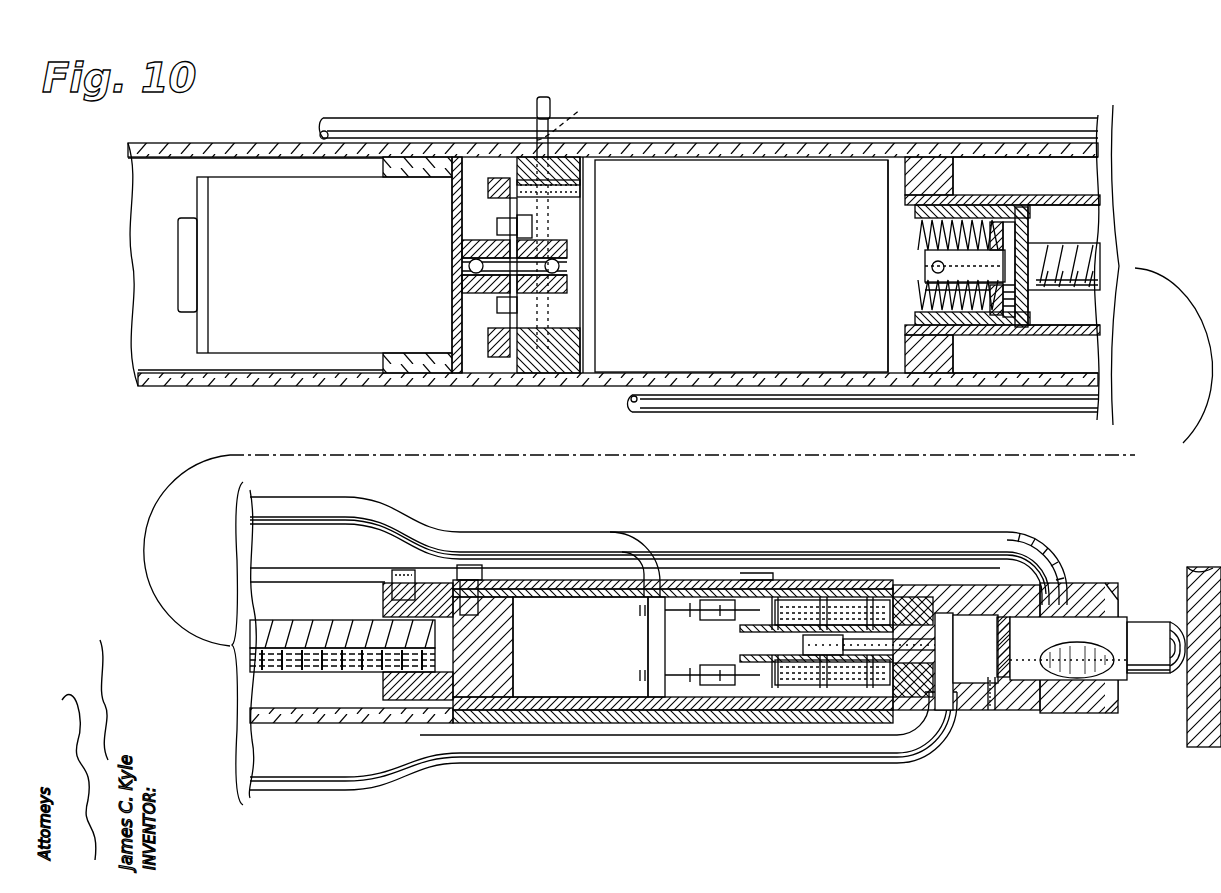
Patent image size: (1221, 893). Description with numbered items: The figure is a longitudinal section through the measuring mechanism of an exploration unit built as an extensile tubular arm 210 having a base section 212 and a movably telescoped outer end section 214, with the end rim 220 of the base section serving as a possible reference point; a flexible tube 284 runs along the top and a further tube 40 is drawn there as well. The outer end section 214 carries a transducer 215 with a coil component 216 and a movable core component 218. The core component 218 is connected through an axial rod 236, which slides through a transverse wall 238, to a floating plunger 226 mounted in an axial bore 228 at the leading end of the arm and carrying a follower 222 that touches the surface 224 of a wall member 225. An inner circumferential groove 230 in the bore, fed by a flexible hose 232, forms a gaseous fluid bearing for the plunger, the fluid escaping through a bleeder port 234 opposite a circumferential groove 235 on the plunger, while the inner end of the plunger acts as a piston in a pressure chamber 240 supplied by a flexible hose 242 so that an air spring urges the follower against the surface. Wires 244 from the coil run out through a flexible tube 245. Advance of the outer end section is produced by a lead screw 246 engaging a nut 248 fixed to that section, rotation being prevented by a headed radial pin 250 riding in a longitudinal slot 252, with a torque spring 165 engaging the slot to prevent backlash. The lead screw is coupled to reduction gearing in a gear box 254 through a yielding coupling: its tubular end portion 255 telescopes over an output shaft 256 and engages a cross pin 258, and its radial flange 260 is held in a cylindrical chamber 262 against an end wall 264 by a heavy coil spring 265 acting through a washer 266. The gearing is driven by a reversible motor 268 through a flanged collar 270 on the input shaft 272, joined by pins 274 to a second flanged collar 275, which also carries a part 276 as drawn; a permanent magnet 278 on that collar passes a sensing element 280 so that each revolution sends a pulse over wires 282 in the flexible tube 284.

The rail rod 40 is at (549, 98).
The torque spring 165 is at (395, 572).
The tubular arm 210 is at (290, 388).
The base section 212 is at (725, 395).
The outer end section 214 is at (958, 582).
The transducer 215 is at (818, 713).
The coil component 216 is at (808, 605).
The core component 218 is at (828, 640).
The end rim 220 is at (775, 580).
The follower 222 is at (1180, 668).
The surface 224 is at (1185, 735).
The wall member 225 is at (1195, 592).
The floating plunger 226 is at (1128, 630).
The axial bore 228 is at (1087, 620).
The inner circumferential groove 230 is at (1068, 680).
The flexible hose 232 is at (1060, 550).
The bleeder port 234 is at (992, 700).
The circumferential groove 235 is at (1005, 640).
The axial rod 236 is at (895, 690).
The transverse wall 238 is at (920, 692).
The pressure chamber 240 is at (944, 615).
The flexible hose 242 is at (555, 740).
The wires 244 is at (652, 610).
The flexible tube 245 is at (488, 544).
The lead screw 246 is at (348, 645).
The nut 248 is at (512, 688).
The headed radial pin 250 is at (468, 568).
The longitudinal slot 252 is at (508, 578).
The gear box 254 is at (766, 269).
The tubular end portion 255 is at (960, 218).
The output shaft 256 is at (932, 265).
The cross pin 258 is at (925, 277).
The radial flange 260 is at (1012, 225).
The cylindrical chamber 262 is at (1000, 335).
The end wall 264 is at (1030, 313).
The heavy coil spring 265 is at (930, 290).
The washer 266 is at (995, 225).
The reversible motor 268 is at (336, 272).
The flanged collar 270 is at (550, 272).
The input shaft 272 is at (531, 268).
The pins 274 is at (497, 226).
The second flanged collar 275 is at (470, 247).
The lower gear 276 is at (488, 272).
The permanent magnet 278 is at (488, 186).
The sensing element 280 is at (580, 190).
The wires 282 is at (580, 112).
The flexible tube 284 is at (537, 108).